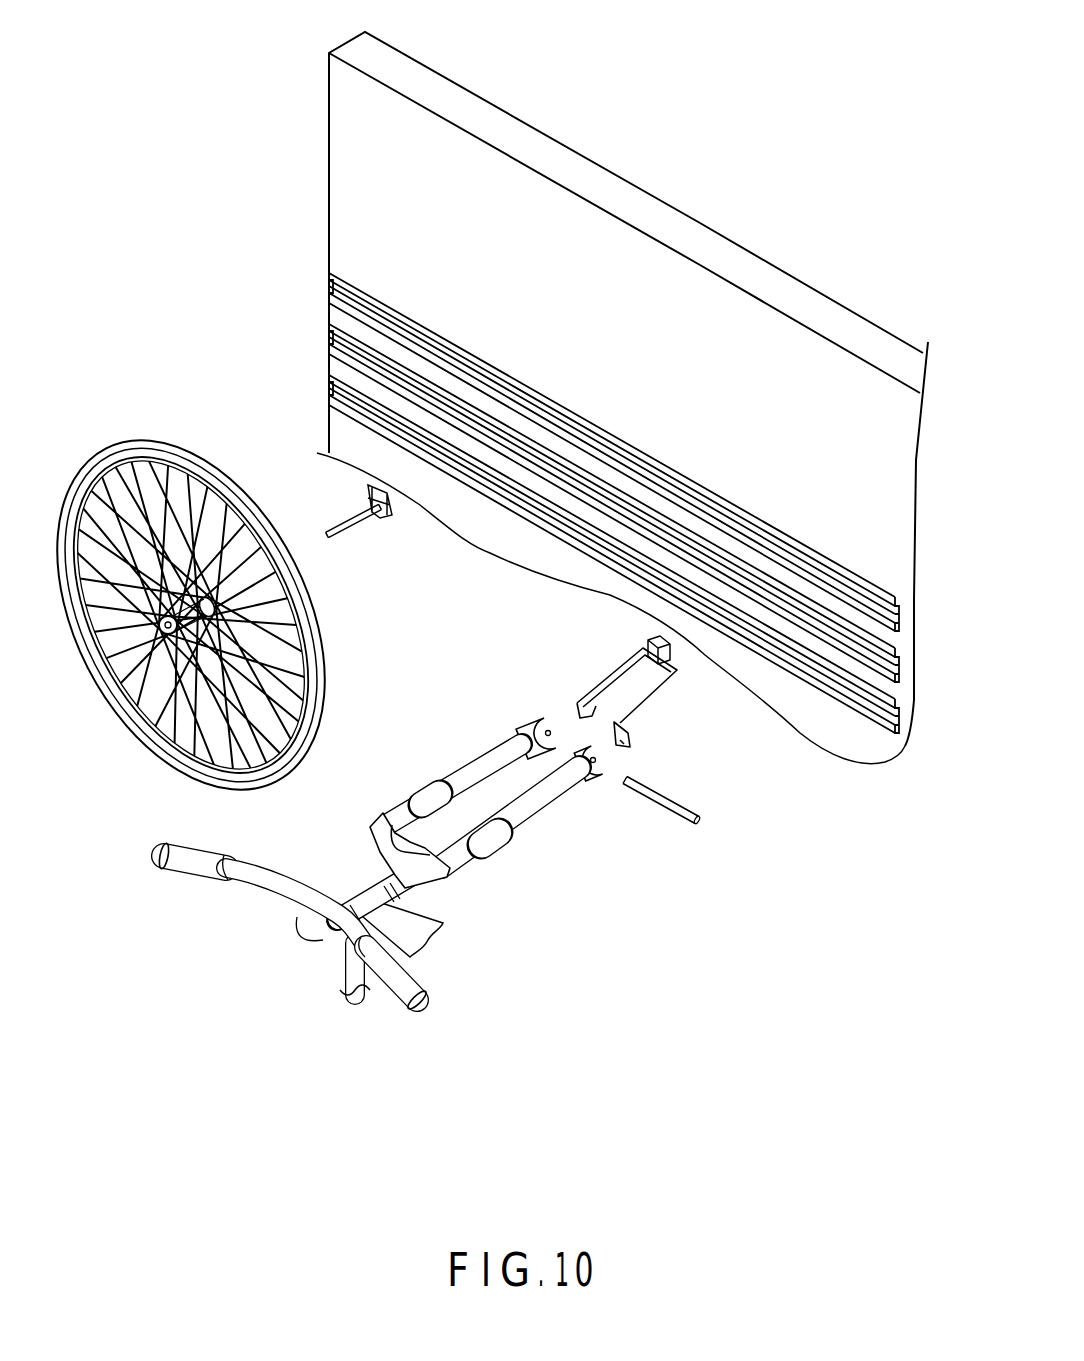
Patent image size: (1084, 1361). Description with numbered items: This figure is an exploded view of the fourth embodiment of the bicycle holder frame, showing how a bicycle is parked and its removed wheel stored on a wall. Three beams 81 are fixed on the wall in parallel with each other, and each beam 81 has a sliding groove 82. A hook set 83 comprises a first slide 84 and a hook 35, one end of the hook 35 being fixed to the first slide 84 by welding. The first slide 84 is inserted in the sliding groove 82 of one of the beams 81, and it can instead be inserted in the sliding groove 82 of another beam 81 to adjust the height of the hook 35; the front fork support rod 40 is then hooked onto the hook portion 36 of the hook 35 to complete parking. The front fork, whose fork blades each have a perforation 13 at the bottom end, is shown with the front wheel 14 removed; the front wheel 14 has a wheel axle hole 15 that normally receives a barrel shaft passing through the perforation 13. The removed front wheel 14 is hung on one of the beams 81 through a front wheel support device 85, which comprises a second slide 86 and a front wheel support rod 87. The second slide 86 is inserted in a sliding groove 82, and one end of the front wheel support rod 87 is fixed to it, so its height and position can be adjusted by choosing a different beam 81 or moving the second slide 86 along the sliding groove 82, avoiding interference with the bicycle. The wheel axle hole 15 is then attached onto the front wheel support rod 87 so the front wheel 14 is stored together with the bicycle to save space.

The perforation 13 is at (592, 753).
The front wheel 14 is at (191, 622).
The wheel axle hole 15 is at (165, 630).
The hook 35 is at (625, 703).
The hook portion 36 is at (603, 690).
The front fork support rod 40 is at (665, 810).
The beam 81 is at (632, 428).
The sliding groove 82 is at (895, 720).
The hook set 83 is at (655, 708).
The first slide 84 is at (670, 648).
The front wheel support device 85 is at (302, 464).
The second slide 86 is at (373, 487).
The front wheel support rod 87 is at (347, 520).